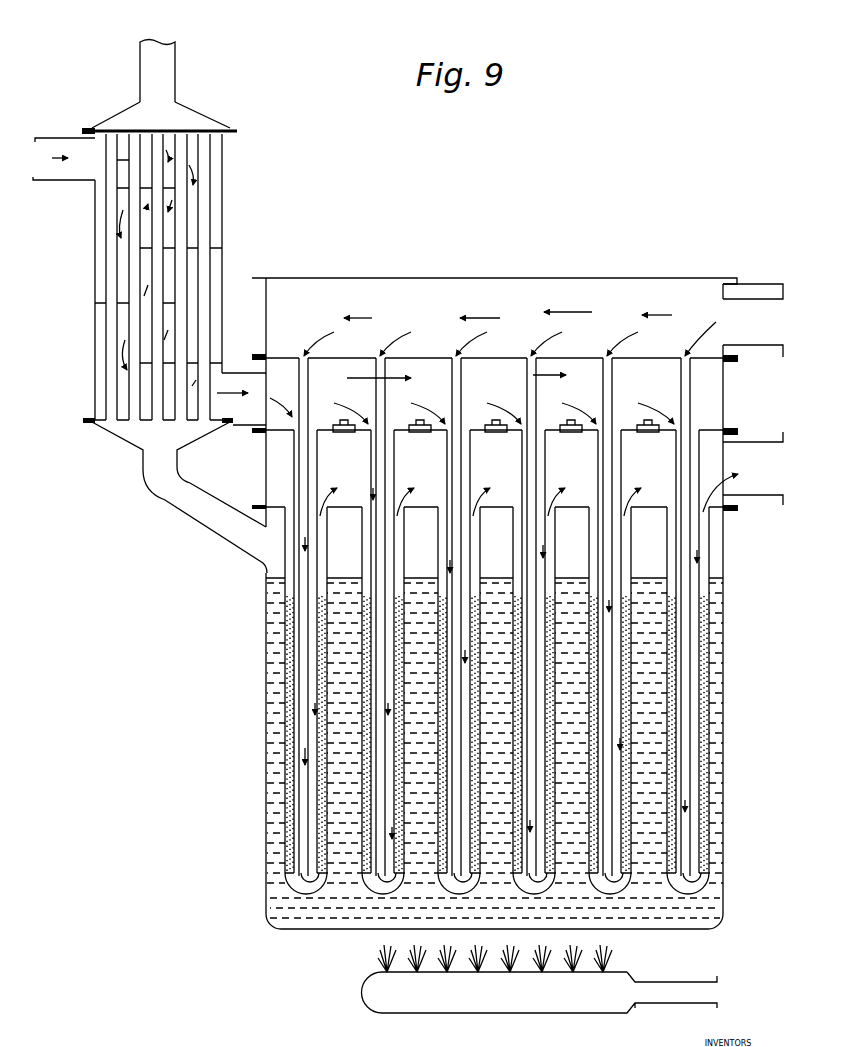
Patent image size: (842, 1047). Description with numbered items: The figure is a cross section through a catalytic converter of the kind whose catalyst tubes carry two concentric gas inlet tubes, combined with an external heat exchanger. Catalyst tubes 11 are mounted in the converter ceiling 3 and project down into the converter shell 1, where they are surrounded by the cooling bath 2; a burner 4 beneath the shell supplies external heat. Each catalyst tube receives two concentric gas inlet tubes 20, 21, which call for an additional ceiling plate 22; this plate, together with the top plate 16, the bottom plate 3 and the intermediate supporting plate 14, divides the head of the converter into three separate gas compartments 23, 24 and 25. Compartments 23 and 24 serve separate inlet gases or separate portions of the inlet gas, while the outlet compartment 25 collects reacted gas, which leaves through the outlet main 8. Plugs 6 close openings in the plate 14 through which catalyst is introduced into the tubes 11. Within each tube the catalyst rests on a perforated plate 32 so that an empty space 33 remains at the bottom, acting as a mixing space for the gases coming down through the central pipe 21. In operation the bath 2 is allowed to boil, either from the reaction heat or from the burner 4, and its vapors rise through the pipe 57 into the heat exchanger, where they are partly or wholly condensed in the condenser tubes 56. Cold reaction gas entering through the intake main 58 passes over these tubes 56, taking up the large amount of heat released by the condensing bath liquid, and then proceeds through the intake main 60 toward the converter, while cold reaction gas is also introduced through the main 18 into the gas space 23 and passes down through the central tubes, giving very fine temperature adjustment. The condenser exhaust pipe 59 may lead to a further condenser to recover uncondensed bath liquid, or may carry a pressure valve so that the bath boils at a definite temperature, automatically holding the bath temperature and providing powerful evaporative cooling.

The converter shell 1 is at (725, 640).
The cooling bath 2 is at (266, 690).
The converter ceiling 3 is at (648, 507).
The burner 4 is at (503, 1008).
The plug 6 is at (348, 433).
The outlet main 8 is at (746, 483).
The catalyst tube 11 is at (326, 552).
The supporting plate 14 is at (707, 430).
The top plate 16 is at (310, 278).
The inlet passage 18 is at (757, 307).
The gas inlet tube 20 is at (466, 455).
The gas inlet tube 21 is at (308, 390).
The additional ceiling plate 22 is at (283, 357).
The gas compartment 23 is at (510, 327).
The gas compartment 24 is at (472, 399).
The outlet compartment 25 is at (480, 481).
The perforated plate 32 is at (295, 893).
The empty space 33 is at (382, 883).
The condenser tube 56 is at (110, 232).
The pipe 57 is at (197, 527).
The reaction gas intake main 58 is at (45, 138).
The condenser exhaust pipe 59 is at (160, 44).
The reaction gas intake main 60 is at (240, 376).